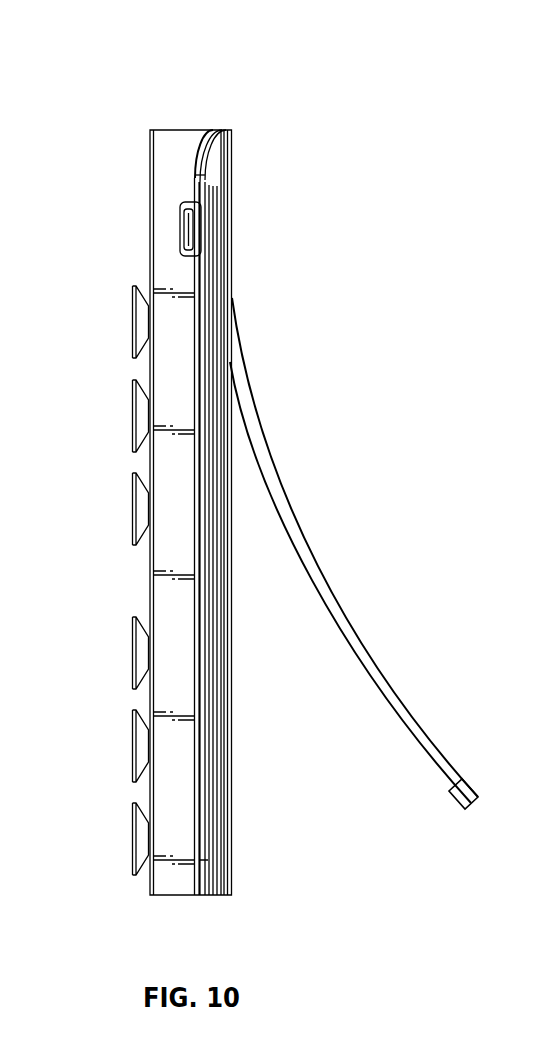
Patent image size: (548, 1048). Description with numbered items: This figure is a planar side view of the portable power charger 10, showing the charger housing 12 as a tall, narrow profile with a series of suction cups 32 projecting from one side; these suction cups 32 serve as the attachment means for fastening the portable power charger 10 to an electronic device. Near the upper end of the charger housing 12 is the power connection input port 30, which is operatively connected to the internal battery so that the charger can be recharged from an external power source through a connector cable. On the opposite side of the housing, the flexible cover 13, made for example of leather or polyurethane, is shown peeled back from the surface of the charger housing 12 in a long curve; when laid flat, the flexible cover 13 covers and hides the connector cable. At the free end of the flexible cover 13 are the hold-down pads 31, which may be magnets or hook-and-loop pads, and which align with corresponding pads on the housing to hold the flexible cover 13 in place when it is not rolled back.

The portable power charger 10 is at (95, 62).
The charger housing 12 is at (168, 157).
The flexible cover 13 is at (350, 626).
The power connection input port 30 is at (198, 228).
The hold-down pads 31 is at (448, 802).
The suction cups 32 is at (131, 312).